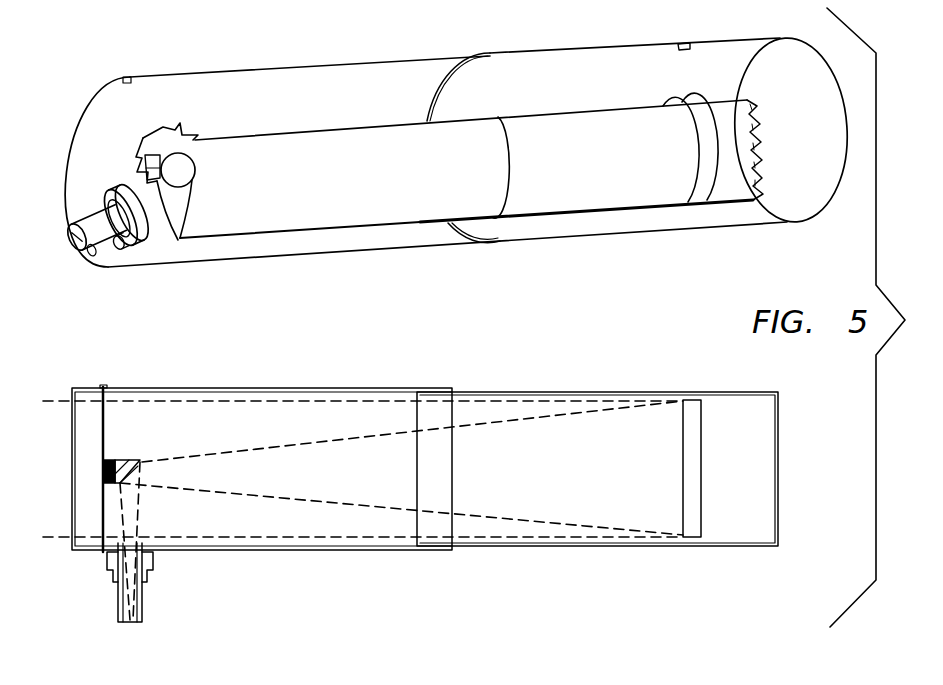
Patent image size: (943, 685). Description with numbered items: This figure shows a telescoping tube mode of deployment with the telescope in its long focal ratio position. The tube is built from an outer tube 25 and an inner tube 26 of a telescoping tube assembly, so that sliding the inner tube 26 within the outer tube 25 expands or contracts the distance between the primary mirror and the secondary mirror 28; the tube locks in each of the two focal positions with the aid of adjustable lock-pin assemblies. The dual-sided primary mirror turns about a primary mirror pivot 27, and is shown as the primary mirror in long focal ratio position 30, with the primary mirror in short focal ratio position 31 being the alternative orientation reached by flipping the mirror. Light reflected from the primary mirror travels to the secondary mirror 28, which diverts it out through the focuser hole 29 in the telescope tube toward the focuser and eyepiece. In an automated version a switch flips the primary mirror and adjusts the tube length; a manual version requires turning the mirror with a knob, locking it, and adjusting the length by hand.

The outer tube of a telescoping tube assembly 25 is at (277, 263).
The inner tube of a telescoping tube assembly 26 is at (542, 230).
The primary mirror pivot 27 is at (683, 45).
The secondary mirror 28 is at (117, 248).
The focuser hole in telescope tube 29 is at (80, 235).
The primary mirror in long focal ratio position 30 is at (662, 142).
The primary mirror in short focal ratio position 31 is at (722, 148).